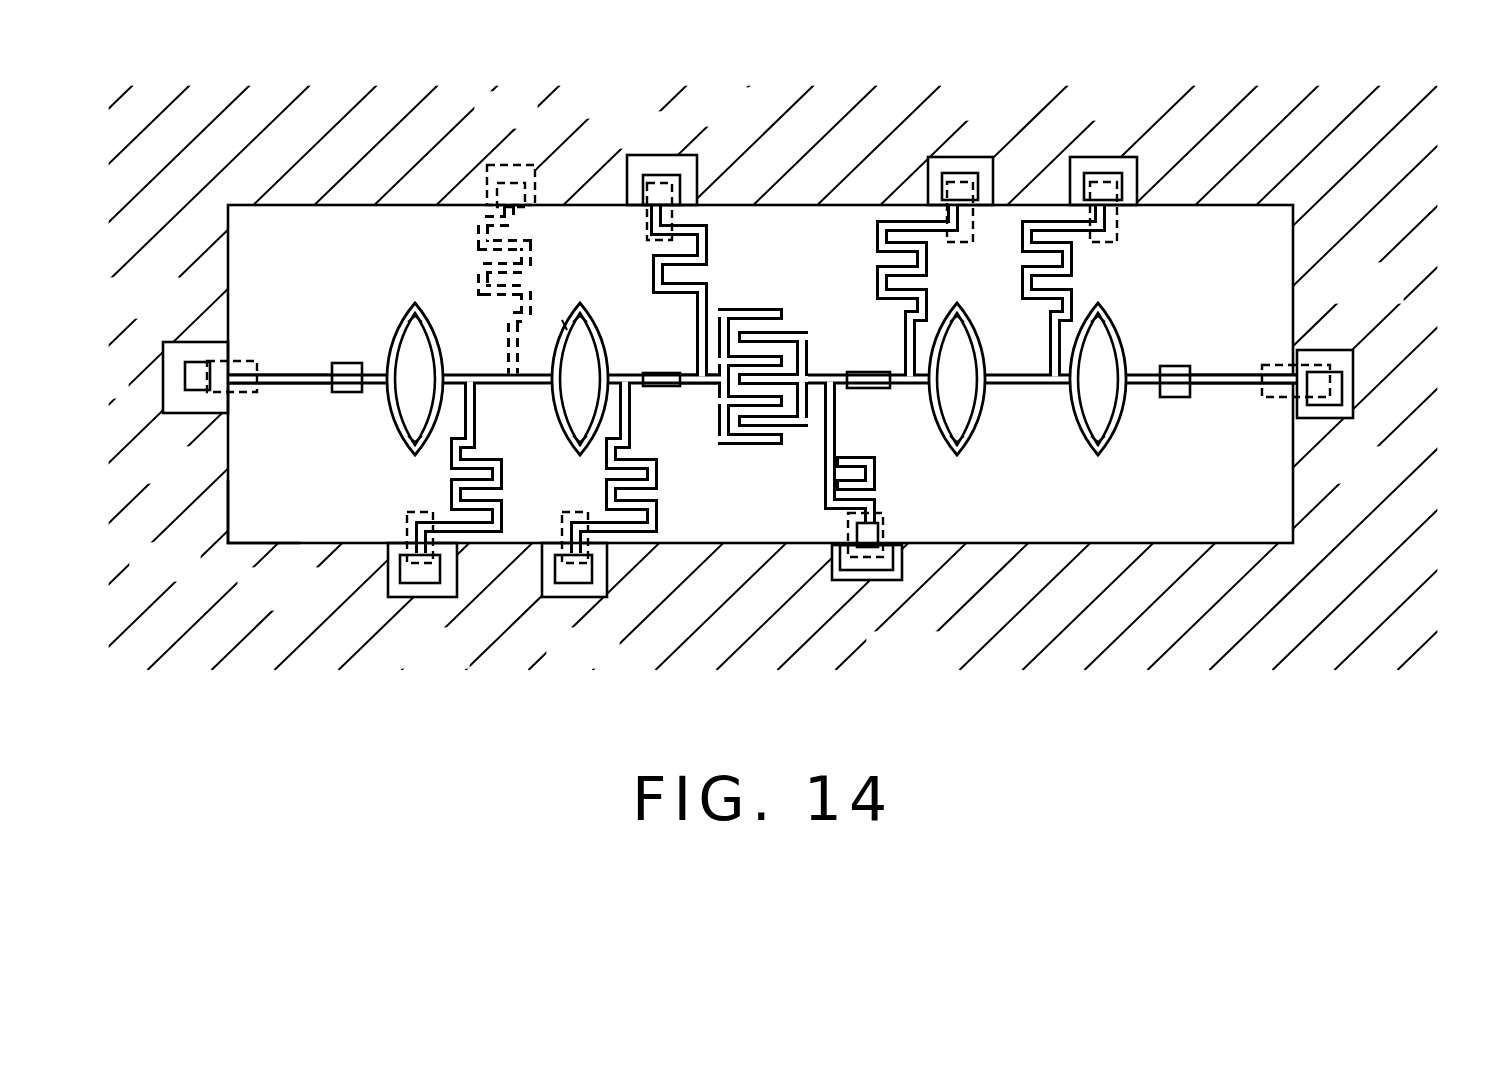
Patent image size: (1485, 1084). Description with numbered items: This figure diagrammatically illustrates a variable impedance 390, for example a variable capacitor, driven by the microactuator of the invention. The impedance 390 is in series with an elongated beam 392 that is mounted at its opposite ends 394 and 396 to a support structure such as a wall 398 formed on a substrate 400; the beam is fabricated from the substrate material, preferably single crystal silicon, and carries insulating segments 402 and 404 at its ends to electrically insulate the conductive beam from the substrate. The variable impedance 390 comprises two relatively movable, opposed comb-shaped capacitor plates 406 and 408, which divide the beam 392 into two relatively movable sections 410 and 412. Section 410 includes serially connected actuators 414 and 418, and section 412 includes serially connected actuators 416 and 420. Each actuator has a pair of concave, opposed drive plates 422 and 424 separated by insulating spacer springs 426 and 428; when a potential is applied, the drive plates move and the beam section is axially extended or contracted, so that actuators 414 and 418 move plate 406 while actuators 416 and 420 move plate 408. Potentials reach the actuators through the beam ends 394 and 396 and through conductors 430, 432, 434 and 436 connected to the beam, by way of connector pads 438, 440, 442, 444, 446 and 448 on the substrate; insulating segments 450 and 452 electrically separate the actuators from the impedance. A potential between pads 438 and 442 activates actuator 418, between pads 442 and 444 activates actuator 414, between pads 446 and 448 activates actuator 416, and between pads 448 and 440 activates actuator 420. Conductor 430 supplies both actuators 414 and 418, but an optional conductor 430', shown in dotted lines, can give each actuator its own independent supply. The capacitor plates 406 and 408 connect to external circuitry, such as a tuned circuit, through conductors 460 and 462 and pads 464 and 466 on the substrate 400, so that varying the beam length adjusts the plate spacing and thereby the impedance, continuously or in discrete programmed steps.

The variable impedance 390 is at (787, 300).
The elongated beam 392 is at (305, 355).
The beam end 394 is at (273, 393).
The beam end 396 is at (1237, 387).
The wall 398 is at (228, 500).
The substrate 400 is at (314, 606).
The insulating segment 402 is at (243, 368).
The insulating segment 404 is at (1282, 375).
The comb-shaped capacitor plate 406 is at (722, 443).
The comb-shaped capacitor plate 408 is at (800, 445).
The beam section 410 is at (690, 365).
The beam section 412 is at (825, 365).
The actuator 414 is at (551, 296).
The second actuator 416 is at (975, 428).
The second actuator 418 is at (388, 432).
The second actuator 420 is at (1130, 428).
The concave drive plate 422 is at (557, 391).
The concave drive plate 424 is at (592, 312).
The insulating spacer spring 426 is at (580, 300).
The insulating spacer spring 428 is at (570, 440).
The conductor 430 is at (406, 468).
The conductor 430' is at (451, 269).
The conductor 432 is at (662, 497).
The conductor 434 is at (927, 262).
The conductor 436 is at (1075, 270).
The connector pad 438 is at (188, 373).
The connector pad 440 is at (1332, 370).
The connector pad 442 is at (420, 590).
The connector pad 444 is at (572, 590).
The connector pad 446 is at (962, 185).
The connector pad 448 is at (1105, 185).
The insulating segment 450 is at (657, 389).
The insulating segment 452 is at (860, 389).
The conductor 460 is at (710, 240).
The conductor 462 is at (875, 478).
The pad 464 is at (660, 185).
The pad 466 is at (870, 582).